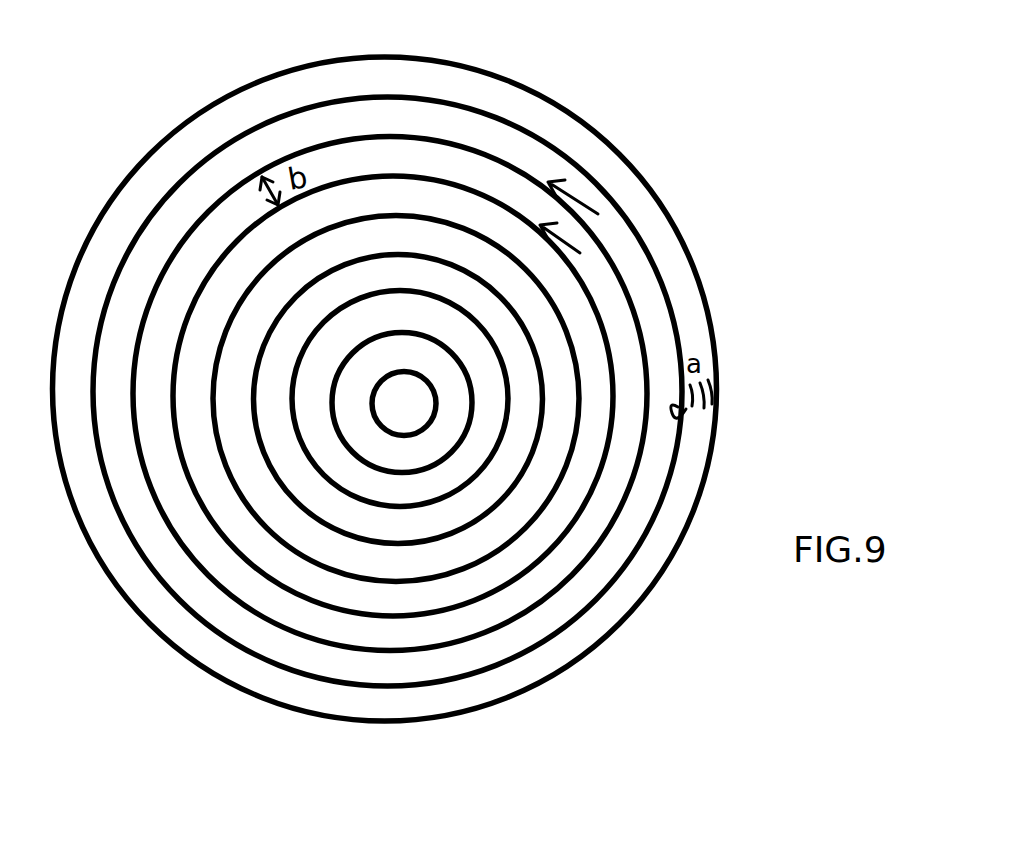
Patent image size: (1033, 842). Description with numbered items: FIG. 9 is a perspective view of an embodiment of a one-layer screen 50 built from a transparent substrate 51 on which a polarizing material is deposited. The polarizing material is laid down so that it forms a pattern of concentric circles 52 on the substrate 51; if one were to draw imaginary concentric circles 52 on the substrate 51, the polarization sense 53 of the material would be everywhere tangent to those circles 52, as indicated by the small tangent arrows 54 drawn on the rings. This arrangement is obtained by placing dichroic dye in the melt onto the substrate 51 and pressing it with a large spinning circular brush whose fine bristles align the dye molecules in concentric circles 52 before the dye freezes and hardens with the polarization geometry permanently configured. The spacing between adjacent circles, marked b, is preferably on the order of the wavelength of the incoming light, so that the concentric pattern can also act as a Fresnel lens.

The concentric ring lens 50 is at (583, 97).
The transparent substrate 51 is at (583, 150).
The concentric circles 52 is at (640, 175).
The polarization sense 53 is at (567, 250).
The zone markings 54 is at (713, 380).